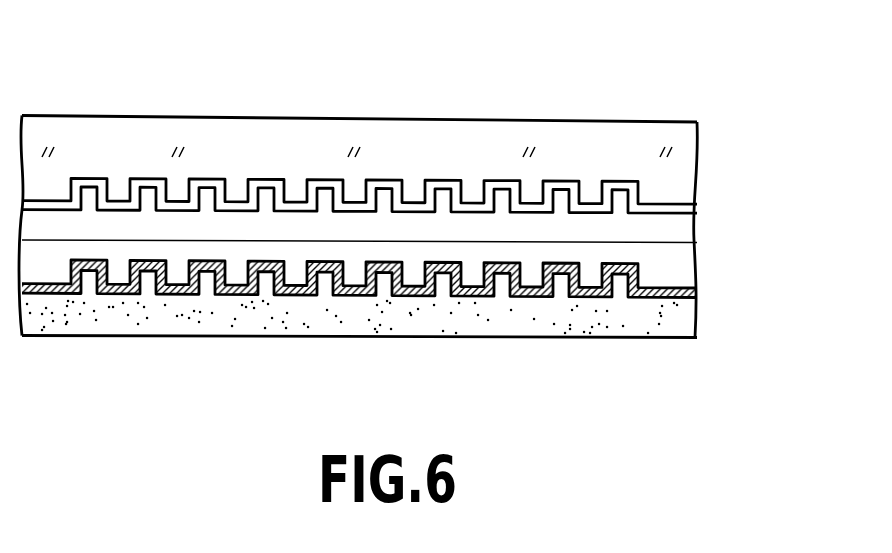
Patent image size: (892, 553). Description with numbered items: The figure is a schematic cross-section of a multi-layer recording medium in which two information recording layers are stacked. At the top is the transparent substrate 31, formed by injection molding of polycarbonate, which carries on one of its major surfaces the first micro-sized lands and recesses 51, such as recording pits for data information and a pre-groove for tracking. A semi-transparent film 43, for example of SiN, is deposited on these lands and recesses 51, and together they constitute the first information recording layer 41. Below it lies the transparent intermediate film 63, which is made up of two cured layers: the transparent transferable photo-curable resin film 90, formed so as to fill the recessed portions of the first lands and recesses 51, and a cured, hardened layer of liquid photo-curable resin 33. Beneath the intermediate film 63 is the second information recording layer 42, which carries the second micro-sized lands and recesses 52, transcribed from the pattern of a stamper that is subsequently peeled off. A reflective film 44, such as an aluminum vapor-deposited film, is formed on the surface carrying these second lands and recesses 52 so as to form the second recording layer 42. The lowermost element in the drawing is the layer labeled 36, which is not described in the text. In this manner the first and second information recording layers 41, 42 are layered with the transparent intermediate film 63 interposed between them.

The transparent substrate 31 is at (683, 142).
The first information recording layer 41 is at (382, 53).
The semi-transparent film 43 is at (268, 179).
The first micro-sized lands and recesses 51 is at (293, 181).
The transparent transferable photo-curable resin film 90 is at (58, 222).
The transparent intermediate film 63 is at (673, 262).
The liquid photo-curable resin 33 is at (53, 262).
The second information recording layer 42 is at (355, 391).
The reflective film 44 is at (242, 292).
The second micro-sized lands and recesses 52 is at (267, 272).
The lower substrate 36 is at (677, 315).